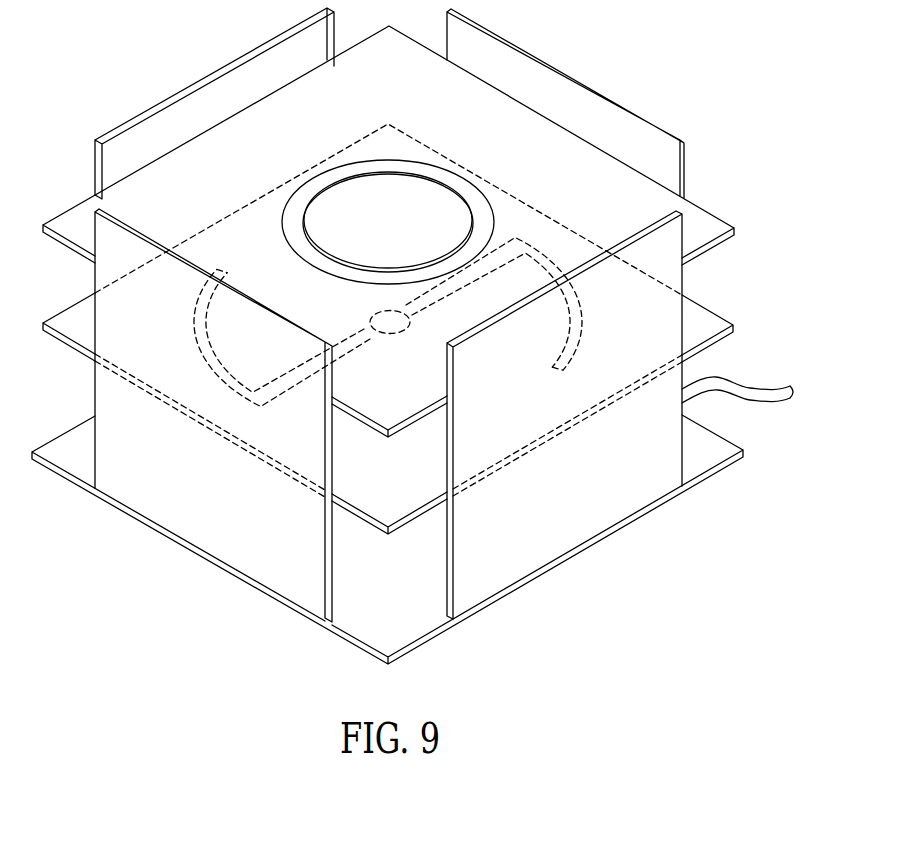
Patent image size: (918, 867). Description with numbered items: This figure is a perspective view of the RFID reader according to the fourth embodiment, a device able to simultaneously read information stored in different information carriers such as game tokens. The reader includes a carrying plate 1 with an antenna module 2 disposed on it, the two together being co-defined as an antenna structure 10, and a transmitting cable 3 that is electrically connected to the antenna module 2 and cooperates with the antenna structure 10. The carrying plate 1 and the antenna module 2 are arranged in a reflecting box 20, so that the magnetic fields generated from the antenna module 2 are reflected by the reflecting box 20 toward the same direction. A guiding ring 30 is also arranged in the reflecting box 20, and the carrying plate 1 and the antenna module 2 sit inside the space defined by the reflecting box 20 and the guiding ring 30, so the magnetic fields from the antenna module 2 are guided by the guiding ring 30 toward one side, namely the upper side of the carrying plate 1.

The carrying plate 1 is at (557, 261).
The antenna module 2 is at (762, 240).
The transmitting cable 3 is at (738, 382).
The antenna structure 10 is at (424, 280).
The reflecting box 20 is at (567, 70).
The guiding ring 30 is at (377, 161).